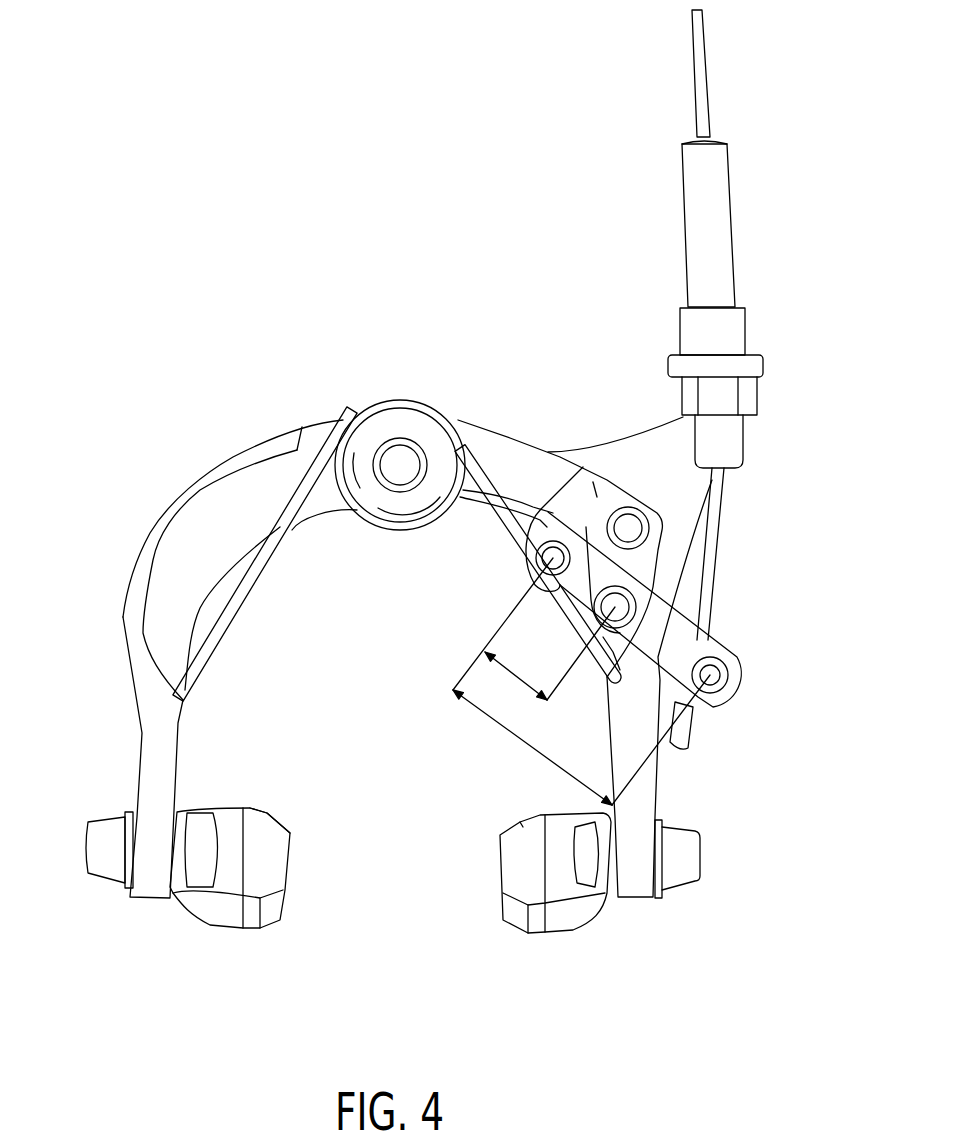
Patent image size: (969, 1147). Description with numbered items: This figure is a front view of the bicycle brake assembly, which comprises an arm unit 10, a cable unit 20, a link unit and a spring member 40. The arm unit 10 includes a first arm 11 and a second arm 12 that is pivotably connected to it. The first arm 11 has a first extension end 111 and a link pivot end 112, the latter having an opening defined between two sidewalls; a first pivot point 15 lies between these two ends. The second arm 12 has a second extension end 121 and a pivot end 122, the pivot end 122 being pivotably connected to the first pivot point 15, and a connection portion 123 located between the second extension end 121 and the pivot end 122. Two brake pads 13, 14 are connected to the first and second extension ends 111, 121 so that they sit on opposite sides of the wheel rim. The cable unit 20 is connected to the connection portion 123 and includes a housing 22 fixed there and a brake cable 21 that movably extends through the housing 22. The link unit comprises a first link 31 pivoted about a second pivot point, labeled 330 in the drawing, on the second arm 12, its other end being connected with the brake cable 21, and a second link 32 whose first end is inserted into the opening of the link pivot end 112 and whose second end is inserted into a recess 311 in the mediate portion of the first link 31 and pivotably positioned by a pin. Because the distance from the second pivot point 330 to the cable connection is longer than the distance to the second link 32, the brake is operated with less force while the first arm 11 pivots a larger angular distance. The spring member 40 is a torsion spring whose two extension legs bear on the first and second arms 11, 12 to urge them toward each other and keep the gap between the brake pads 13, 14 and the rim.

The arm unit 10 is at (138, 337).
The first arm 11 is at (203, 520).
The first extension end 111 is at (155, 773).
The link pivot end 112 is at (563, 428).
The second arm 12 is at (650, 468).
The second extension end 121 is at (638, 805).
The pivot end 122 is at (393, 415).
The connection portion 123 is at (690, 402).
The brake pad 13 is at (277, 865).
The brake pad 14 is at (515, 874).
The first pivot point 15 is at (400, 465).
The cable unit 20 is at (598, 153).
The brake cable 21 is at (703, 108).
The housing 22 is at (702, 237).
The first link 31 is at (650, 686).
The recess 311 is at (690, 637).
The second link 32 is at (566, 623).
The pivot pin (34) 330 is at (553, 558).
The spring member 40 is at (267, 567).